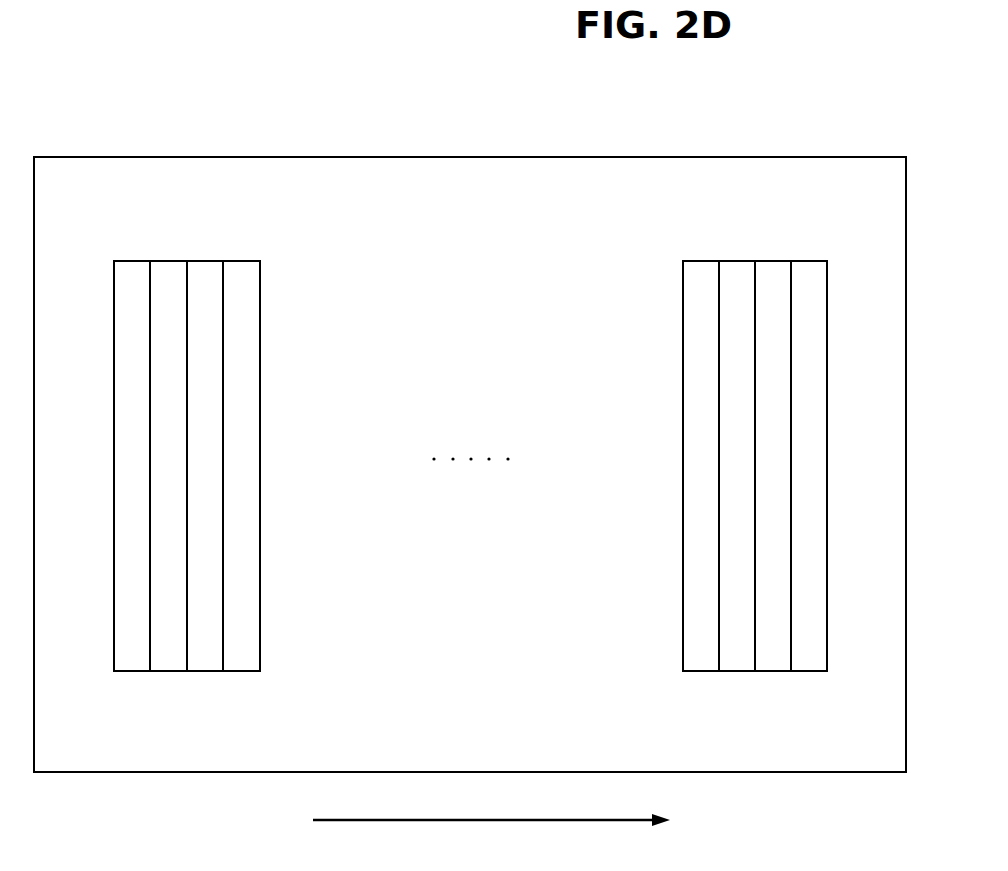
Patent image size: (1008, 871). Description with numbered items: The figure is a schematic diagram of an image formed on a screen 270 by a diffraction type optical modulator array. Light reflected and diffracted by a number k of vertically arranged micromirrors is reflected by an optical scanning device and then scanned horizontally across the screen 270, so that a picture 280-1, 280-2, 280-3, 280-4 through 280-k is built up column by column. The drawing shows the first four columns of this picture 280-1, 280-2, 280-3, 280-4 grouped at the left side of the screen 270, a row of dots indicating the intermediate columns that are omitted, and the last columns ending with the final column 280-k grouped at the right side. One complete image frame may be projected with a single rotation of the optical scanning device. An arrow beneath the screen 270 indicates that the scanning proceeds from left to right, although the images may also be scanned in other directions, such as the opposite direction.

The screen 270 is at (473, 157).
The picture 280-1 is at (134, 672).
The picture 280-2 is at (170, 672).
The picture 280-3 is at (206, 261).
The picture 280-4 is at (242, 324).
The picture 280-k is at (812, 260).